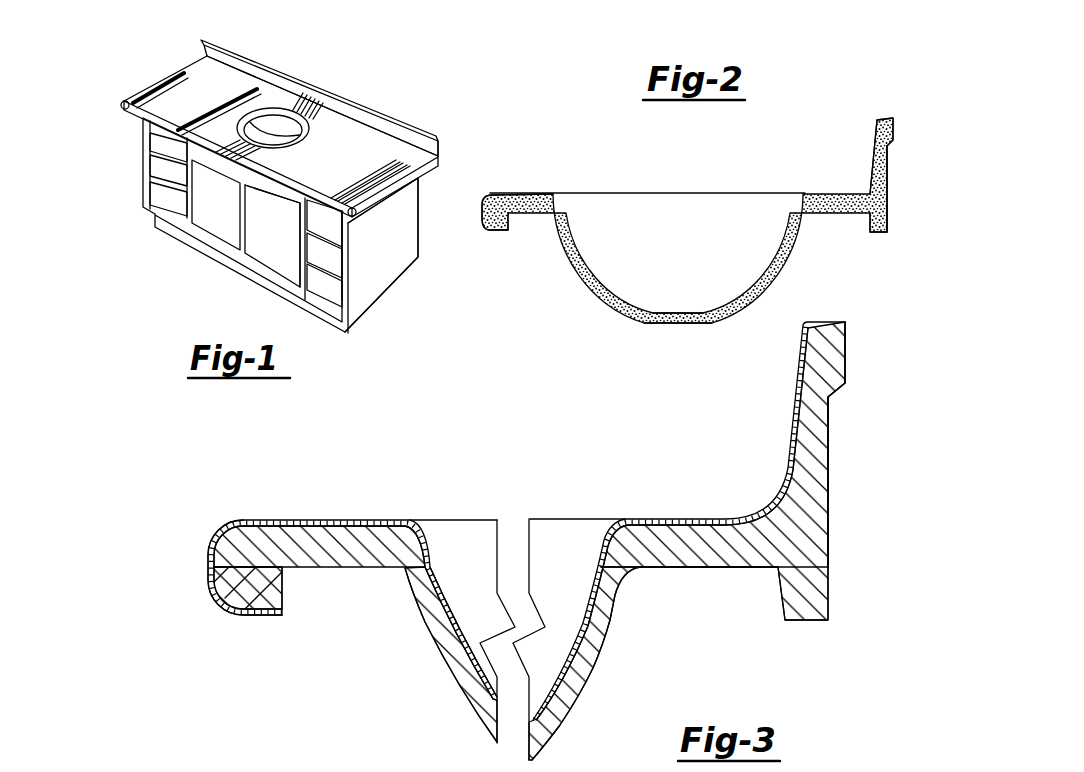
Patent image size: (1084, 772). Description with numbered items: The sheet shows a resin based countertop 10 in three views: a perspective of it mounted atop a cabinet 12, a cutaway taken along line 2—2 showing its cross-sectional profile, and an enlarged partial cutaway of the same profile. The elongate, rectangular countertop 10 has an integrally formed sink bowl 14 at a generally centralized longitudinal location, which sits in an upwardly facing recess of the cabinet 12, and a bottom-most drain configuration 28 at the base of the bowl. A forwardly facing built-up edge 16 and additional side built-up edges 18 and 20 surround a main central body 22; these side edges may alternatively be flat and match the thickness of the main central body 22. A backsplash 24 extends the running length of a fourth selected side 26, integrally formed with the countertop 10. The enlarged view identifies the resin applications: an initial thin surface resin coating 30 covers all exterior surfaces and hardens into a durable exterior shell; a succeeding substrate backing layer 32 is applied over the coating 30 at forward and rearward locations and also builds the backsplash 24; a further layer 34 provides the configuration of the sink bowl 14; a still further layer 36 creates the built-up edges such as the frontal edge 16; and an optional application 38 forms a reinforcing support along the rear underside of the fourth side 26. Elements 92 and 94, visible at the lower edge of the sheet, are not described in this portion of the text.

In FIG. 1, the resin based countertop 10 is at (172, 61).
In FIG. 2, the resin based countertop 10 is at (628, 172).
In FIG. 3, the resin based countertop 10 is at (486, 455).
In FIG. 1, the cabinet 12 is at (139, 197).
In FIG. 1, the sink bowl 14 is at (277, 117).
In FIG. 2, the sink bowl 14 is at (723, 213).
In FIG. 3, the sink bowl 14 is at (590, 525).
In FIG. 1, the forwardly facing built-up edge 16 is at (290, 178).
In FIG. 2, the forwardly facing built-up edge 16 is at (488, 225).
In FIG. 3, the forwardly facing built-up edge 16 is at (208, 568).
In FIG. 1, the side built-up edge 18 is at (157, 80).
In FIG. 1, the side built-up edge 20 is at (396, 192).
In FIG. 1, the main central body 22 is at (340, 178).
In FIG. 2, the main central body 22 is at (830, 185).
In FIG. 3, the main central body 22 is at (688, 517).
In FIG. 1, the backsplash 24 is at (237, 50).
In FIG. 2, the backsplash 24 is at (872, 140).
In FIG. 3, the backsplash 24 is at (829, 430).
In FIG. 1, the fourth selected side 26 is at (397, 123).
In FIG. 2, the fourth selected side 26 is at (893, 178).
In FIG. 3, the fourth selected side 26 is at (829, 517).
In FIG. 1, the bottom-most drain configuration 28 is at (309, 131).
In FIG. 2, the bottom-most drain configuration 28 is at (683, 310).
In FIG. 3, the surface resin coating 30 is at (290, 520).
In FIG. 3, the substrate backing layer 32 is at (343, 533).
In FIG. 3, the sink bowl resin layer 34 is at (576, 660).
In FIG. 3, the built-up edge resin layer 36 is at (278, 583).
In FIG. 3, the reinforcing support 38 is at (805, 620).
In FIG. 3, the mold element 92 is at (315, 771).
In FIG. 3, the mold element 94 is at (420, 771).
In FIG. 1, the section line 2— 2 is at (390, 75).